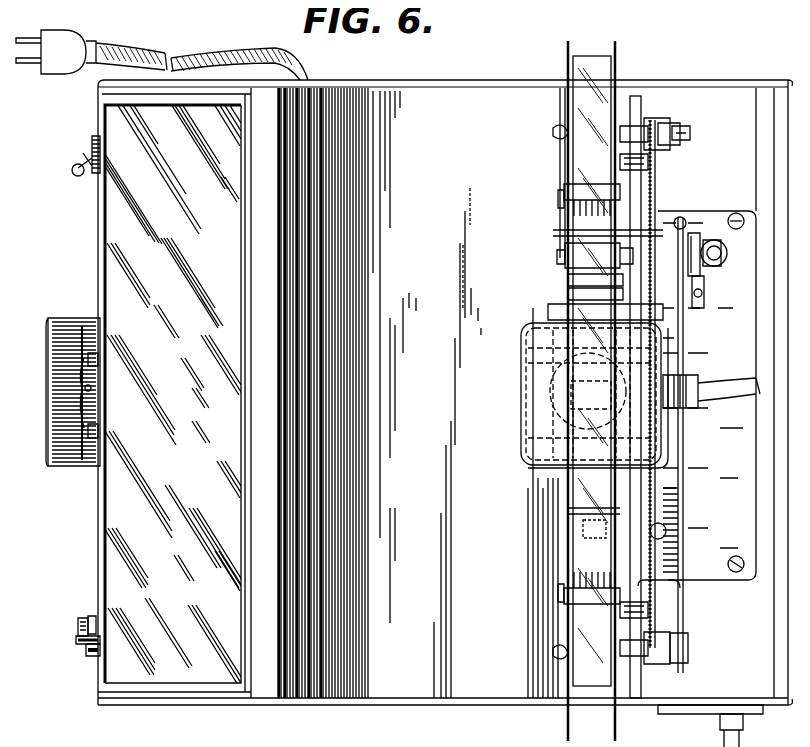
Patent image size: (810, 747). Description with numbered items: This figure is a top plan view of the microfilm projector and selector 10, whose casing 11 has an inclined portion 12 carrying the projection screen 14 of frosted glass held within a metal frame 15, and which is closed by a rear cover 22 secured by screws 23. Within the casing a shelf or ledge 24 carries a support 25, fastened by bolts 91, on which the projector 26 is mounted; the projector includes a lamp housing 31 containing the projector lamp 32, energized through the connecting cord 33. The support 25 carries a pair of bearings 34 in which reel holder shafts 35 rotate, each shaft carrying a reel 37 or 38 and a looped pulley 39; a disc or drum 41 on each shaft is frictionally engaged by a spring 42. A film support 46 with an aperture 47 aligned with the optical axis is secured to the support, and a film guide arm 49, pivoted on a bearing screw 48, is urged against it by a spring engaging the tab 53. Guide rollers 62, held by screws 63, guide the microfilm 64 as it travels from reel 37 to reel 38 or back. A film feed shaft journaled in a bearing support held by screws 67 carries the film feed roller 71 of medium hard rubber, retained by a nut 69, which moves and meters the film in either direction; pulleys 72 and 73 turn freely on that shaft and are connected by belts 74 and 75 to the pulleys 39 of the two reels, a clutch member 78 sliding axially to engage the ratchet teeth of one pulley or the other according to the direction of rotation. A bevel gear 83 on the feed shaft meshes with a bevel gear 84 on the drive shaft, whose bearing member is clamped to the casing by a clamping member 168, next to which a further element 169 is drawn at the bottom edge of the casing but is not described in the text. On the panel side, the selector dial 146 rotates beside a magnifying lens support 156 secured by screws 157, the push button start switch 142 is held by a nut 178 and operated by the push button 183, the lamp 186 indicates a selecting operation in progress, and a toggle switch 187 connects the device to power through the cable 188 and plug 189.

The microfilm projector and selector 10 is at (411, 65).
The casing 11 is at (415, 690).
The inclined portion 12 is at (162, 686).
The projection screen 14 is at (118, 232).
The metal frame 15 is at (97, 533).
The rear cover 22 is at (768, 612).
The screws 23 is at (782, 72).
The shelf or ledge 24 is at (696, 98).
The support 25 is at (664, 583).
The projector 26 is at (526, 470).
The lamp housing 31 is at (518, 320).
The projector lamp 32 is at (530, 364).
The connecting cord 33 is at (715, 395).
The bearings 34 is at (640, 120).
The reel holder shafts 35 is at (672, 125).
The reel 37 is at (563, 52).
The reel 38 is at (560, 705).
The looped pulley 39 is at (656, 122).
The disc or drum 41 is at (624, 100).
The spring 42 is at (640, 156).
The film support 46 is at (545, 314).
The aperture 47 is at (560, 402).
The bearing screw 48 is at (575, 520).
The film guide arm 49 is at (605, 290).
The tab 53 is at (600, 275).
The guide rollers 62 is at (560, 180).
The screws 63 is at (553, 198).
The microfilm 64 is at (570, 500).
The screws 67 is at (676, 212).
The nut 69 is at (553, 250).
The film feed roller 71 is at (580, 248).
The pulley 72 is at (640, 226).
The pulley 73 is at (698, 274).
The belt 74 is at (648, 168).
The belt 75 is at (676, 497).
The clutch member 78 is at (682, 235).
The bevel gear 83 is at (702, 240).
The bevel gear 84 is at (713, 245).
The bolts 91 is at (730, 212).
The push button start switch 142 is at (70, 632).
The selector dial 146 is at (90, 308).
The support 156 is at (82, 378).
The screws 157 is at (83, 352).
The clamping member 168 is at (665, 700).
The foot 169 is at (725, 725).
The nut 178 is at (85, 647).
The push button 183 is at (70, 618).
The lamp 186 is at (80, 612).
The toggle switch 187 is at (80, 150).
The cable 188 is at (190, 45).
The plug 189 is at (52, 52).